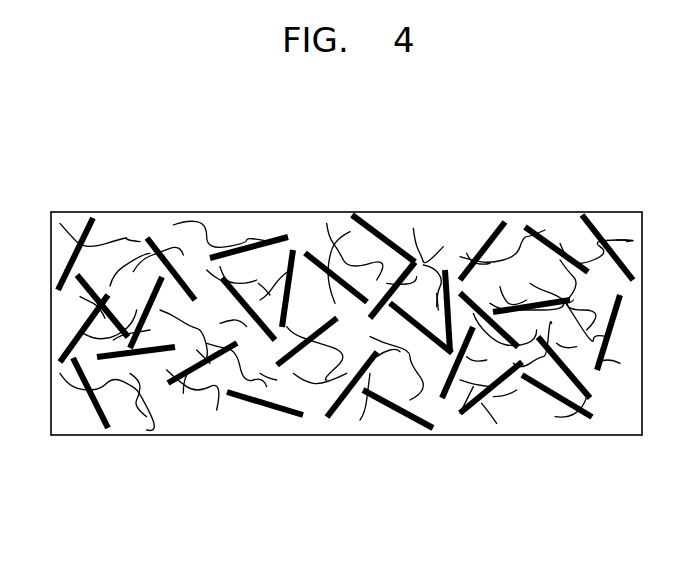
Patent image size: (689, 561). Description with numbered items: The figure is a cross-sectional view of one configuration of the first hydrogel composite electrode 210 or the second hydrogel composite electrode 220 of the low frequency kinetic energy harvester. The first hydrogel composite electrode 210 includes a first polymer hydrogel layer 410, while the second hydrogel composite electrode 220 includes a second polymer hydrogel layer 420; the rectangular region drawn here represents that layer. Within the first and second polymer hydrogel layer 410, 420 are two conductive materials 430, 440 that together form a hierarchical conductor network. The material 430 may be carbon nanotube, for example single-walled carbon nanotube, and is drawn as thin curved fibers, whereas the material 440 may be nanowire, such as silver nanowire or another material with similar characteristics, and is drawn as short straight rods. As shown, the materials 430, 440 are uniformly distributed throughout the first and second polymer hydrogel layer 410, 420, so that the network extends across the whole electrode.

The first hydrogel composite electrode 210 is at (346, 340).
The second hydrogel composite electrode 220 is at (244, 458).
The first polymer hydrogel layer 410 is at (346, 289).
The second polymer hydrogel layer 420 is at (465, 223).
The material 430 is at (172, 236).
The material 440 is at (273, 237).